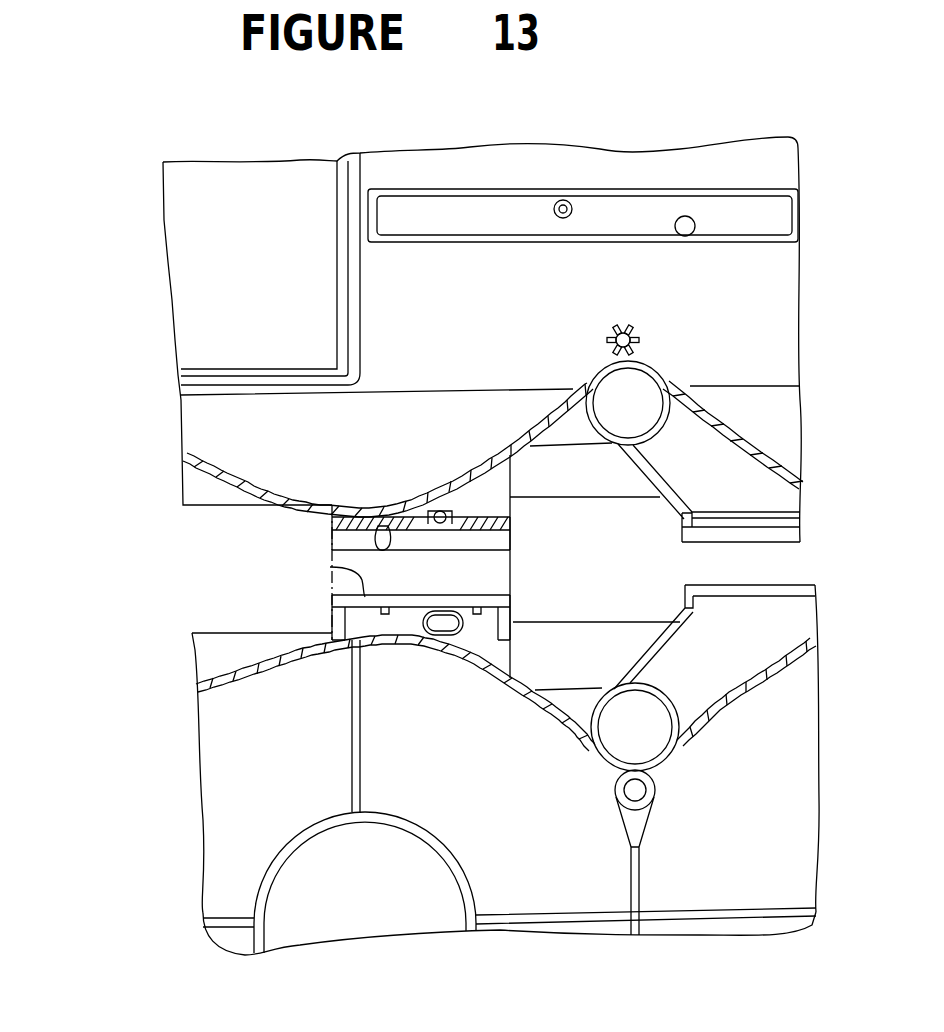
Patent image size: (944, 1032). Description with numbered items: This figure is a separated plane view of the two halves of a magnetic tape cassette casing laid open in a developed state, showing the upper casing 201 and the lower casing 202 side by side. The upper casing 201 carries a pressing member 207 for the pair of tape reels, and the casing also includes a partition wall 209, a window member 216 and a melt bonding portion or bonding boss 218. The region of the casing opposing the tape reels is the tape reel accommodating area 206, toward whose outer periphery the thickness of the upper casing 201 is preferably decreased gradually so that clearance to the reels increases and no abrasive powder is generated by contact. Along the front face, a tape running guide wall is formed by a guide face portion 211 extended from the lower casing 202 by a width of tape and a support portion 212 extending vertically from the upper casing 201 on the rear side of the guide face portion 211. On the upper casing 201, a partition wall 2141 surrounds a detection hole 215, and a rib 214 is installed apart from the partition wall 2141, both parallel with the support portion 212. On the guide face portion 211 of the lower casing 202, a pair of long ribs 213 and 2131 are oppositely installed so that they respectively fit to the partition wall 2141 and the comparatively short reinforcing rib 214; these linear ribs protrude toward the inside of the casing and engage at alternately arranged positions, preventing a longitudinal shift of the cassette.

The upper casing 201 is at (182, 506).
The lower casing 202 is at (183, 647).
The tape reel accommodating area 206 is at (222, 418).
The pressing member 207 is at (506, 189).
The partition wall 209 is at (767, 457).
The guide face portion 211 is at (330, 567).
The support portion 212 is at (440, 510).
The rib 213 is at (385, 616).
The rib 214 is at (380, 526).
The detection hole 215 is at (405, 516).
The window member 216 is at (323, 300).
The melt bonding portion 218 is at (623, 333).
The rib 2131 is at (470, 612).
The partition wall 2141 is at (452, 532).